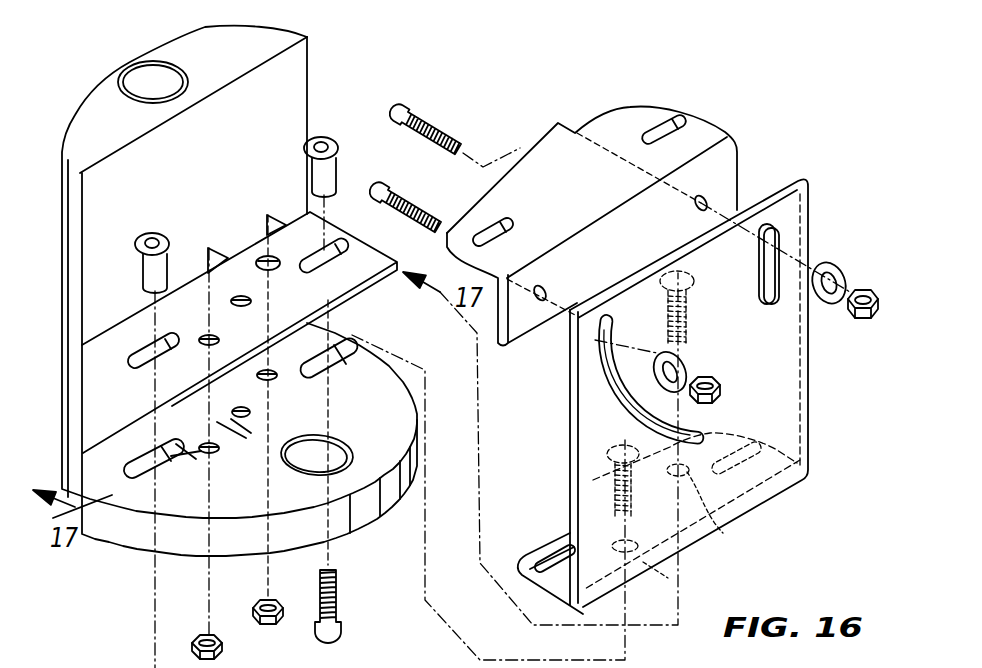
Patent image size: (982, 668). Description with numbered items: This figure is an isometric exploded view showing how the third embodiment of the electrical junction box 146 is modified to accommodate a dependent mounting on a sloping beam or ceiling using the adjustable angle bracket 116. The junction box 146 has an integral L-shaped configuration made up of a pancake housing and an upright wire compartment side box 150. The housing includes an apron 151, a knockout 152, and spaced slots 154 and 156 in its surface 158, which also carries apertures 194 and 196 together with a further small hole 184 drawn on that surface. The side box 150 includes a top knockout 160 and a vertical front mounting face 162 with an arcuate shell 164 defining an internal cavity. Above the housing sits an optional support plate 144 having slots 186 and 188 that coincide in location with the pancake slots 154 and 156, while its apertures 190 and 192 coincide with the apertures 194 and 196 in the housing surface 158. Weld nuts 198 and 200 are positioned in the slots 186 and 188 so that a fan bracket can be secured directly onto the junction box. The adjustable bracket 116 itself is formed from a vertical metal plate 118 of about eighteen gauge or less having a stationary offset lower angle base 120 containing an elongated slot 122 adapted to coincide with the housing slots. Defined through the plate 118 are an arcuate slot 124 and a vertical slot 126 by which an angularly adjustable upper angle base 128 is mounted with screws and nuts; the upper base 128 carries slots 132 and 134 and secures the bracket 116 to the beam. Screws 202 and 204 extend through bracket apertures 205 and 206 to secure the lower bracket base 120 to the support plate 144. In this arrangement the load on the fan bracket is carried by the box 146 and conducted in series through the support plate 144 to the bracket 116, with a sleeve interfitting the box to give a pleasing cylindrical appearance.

The adjustable angle bracket 116 is at (649, 343).
The vertical metal plate 118 is at (716, 373).
The lower angle base 120 is at (638, 528).
The elongated slot 122 is at (560, 545).
The arcuate slot 124 is at (610, 386).
The vertical slot 126 is at (772, 226).
The upper angle base 128 is at (600, 204).
The bracket slot 132 is at (488, 230).
The bracket slot 134 is at (664, 122).
The support plate 144 is at (241, 299).
The electrical junction box 146 is at (250, 469).
The upright wire compartment side box 150 is at (171, 266).
The apron 151 is at (362, 516).
The knockout 152 is at (337, 453).
The slot 154 is at (149, 478).
The slot 156 is at (372, 344).
The housing surface 158 is at (250, 447).
The top knockout 160 is at (152, 75).
The vertical front mounting face 162 is at (224, 171).
The arcuate shell 164 is at (64, 236).
The hole 184 is at (233, 412).
The slot 186 is at (143, 366).
The slot 188 is at (338, 242).
The aperture 190 is at (207, 345).
The aperture 192 is at (264, 256).
The aperture 194 is at (277, 378).
The aperture 196 is at (215, 455).
The weld nut 198 is at (168, 258).
The weld nut 200 is at (363, 100).
The screw 202 is at (573, 462).
The screw 204 is at (692, 318).
The bracket aperture 205 is at (670, 575).
The bracket aperture 206 is at (722, 528).